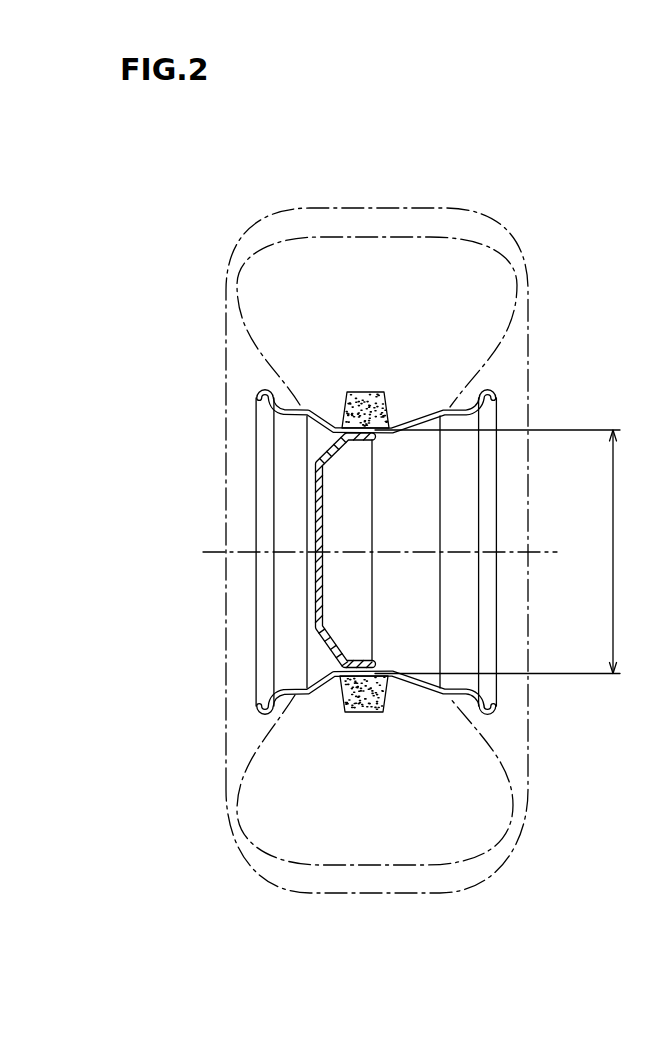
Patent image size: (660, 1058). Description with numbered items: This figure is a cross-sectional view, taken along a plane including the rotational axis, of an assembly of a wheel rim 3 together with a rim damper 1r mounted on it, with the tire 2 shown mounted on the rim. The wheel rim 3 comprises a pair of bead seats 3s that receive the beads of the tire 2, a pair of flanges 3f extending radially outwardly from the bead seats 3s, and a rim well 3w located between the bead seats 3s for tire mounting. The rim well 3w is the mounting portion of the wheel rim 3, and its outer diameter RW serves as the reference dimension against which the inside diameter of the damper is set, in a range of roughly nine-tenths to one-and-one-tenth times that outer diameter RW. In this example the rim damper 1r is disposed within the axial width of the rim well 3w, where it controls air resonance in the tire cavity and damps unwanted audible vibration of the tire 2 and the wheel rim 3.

The tire 2 is at (470, 180).
The wheel rim 3 is at (255, 575).
The flanges 3f is at (269, 398).
The bead seats 3s is at (300, 416).
The rim well 3w is at (380, 433).
The rim damper 1r is at (363, 392).
The outer diameter of the mounting portion RW is at (506, 552).